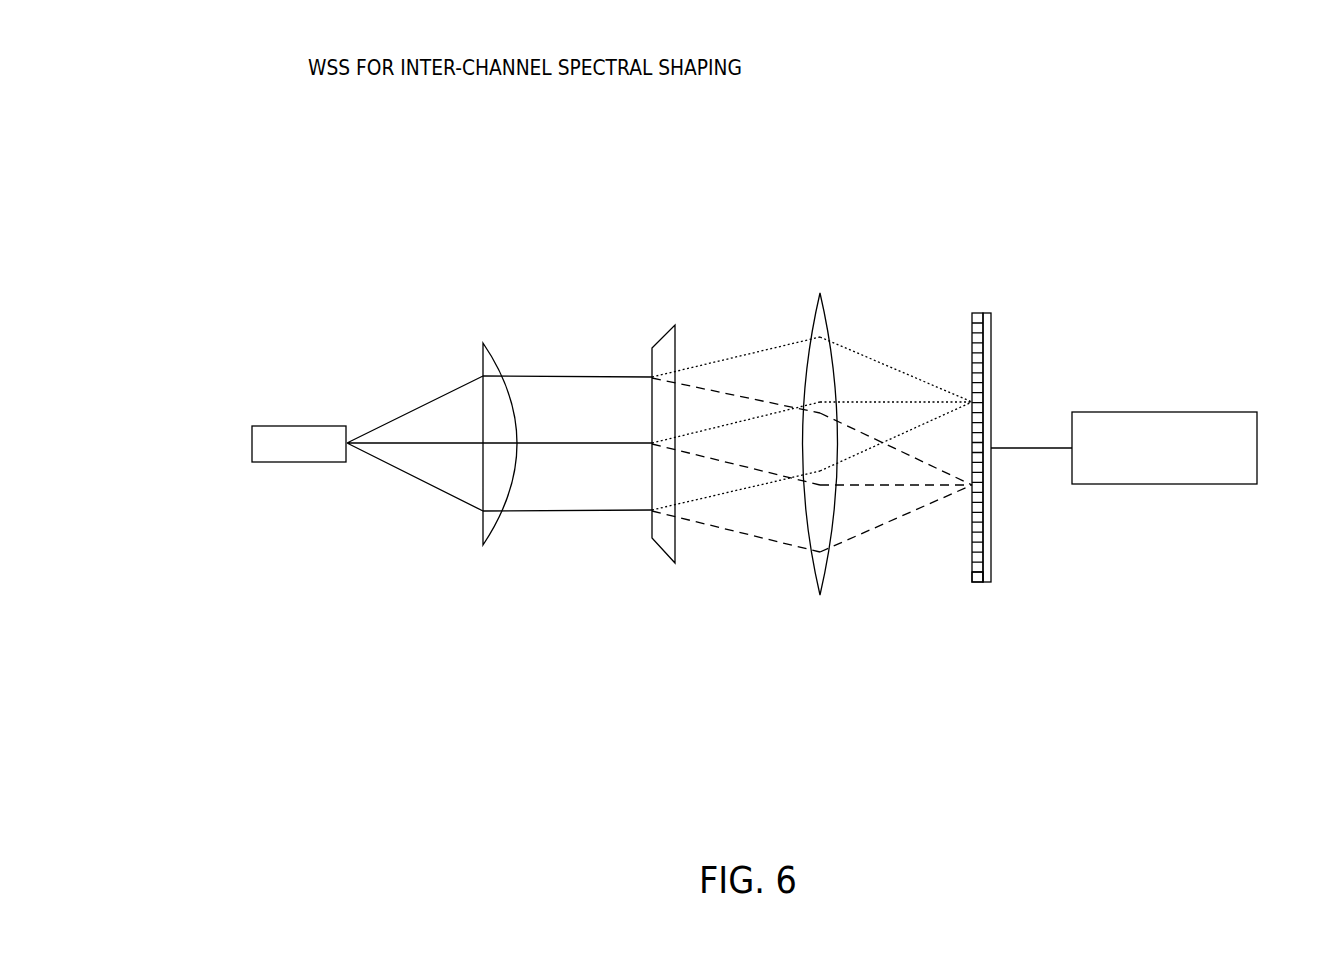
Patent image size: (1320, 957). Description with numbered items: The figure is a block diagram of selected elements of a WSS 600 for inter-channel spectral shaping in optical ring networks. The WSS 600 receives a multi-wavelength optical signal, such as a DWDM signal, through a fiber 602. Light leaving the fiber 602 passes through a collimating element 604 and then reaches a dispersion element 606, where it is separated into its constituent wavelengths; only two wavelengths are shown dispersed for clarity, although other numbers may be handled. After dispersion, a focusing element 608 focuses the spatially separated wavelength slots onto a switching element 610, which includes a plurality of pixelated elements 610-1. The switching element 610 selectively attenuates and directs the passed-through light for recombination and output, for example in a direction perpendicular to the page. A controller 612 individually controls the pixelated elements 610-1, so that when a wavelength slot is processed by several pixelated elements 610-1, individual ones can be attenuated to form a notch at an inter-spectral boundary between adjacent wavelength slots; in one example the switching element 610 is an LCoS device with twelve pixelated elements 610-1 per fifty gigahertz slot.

The WSS 600 is at (254, 82).
The fiber 602 is at (303, 425).
The collimating element 604 is at (490, 343).
The dispersion element 606 is at (668, 329).
The focusing element 608 is at (820, 293).
The switching element 610 is at (982, 313).
The pixelated elements 610-1 is at (972, 580).
The controller 612 is at (1168, 412).